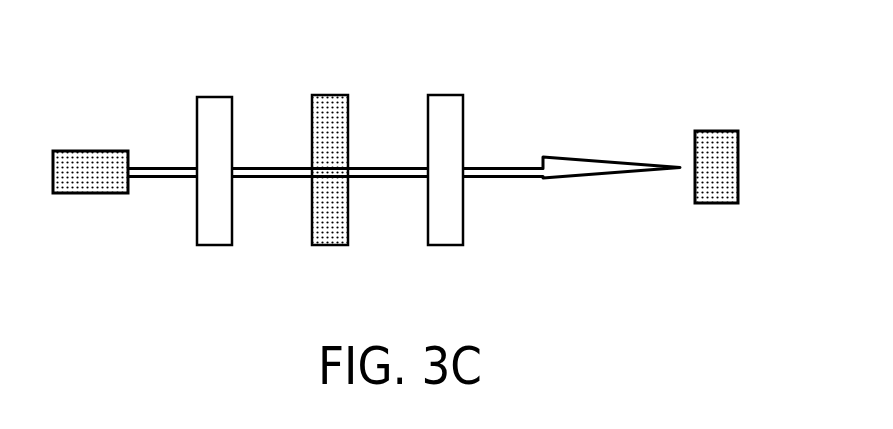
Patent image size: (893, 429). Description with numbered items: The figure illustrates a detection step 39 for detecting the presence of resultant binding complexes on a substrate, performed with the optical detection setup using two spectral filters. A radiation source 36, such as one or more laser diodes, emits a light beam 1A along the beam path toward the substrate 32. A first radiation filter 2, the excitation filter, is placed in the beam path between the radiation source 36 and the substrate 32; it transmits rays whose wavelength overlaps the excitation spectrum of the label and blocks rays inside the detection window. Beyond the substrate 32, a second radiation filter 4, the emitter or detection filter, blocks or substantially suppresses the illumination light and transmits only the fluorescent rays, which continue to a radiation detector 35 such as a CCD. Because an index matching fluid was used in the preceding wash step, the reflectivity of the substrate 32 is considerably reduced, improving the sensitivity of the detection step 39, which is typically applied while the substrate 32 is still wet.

The radiation source 36 is at (90, 194).
The light beam 1A is at (158, 165).
The first radiation filter 2 is at (215, 97).
The substrate 32 is at (329, 95).
The second radiation filter 4 is at (445, 95).
The radiation detector 35 is at (716, 204).
The detection step 39 is at (534, 88).